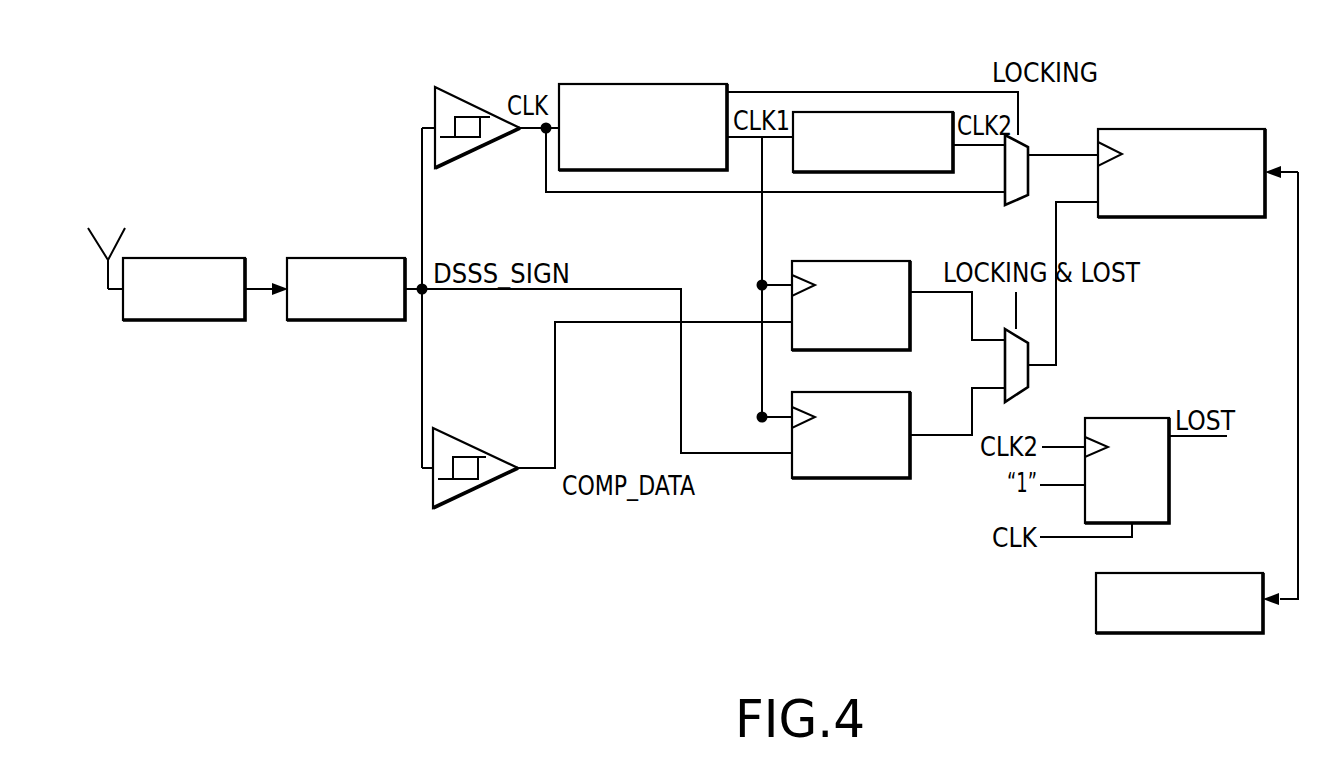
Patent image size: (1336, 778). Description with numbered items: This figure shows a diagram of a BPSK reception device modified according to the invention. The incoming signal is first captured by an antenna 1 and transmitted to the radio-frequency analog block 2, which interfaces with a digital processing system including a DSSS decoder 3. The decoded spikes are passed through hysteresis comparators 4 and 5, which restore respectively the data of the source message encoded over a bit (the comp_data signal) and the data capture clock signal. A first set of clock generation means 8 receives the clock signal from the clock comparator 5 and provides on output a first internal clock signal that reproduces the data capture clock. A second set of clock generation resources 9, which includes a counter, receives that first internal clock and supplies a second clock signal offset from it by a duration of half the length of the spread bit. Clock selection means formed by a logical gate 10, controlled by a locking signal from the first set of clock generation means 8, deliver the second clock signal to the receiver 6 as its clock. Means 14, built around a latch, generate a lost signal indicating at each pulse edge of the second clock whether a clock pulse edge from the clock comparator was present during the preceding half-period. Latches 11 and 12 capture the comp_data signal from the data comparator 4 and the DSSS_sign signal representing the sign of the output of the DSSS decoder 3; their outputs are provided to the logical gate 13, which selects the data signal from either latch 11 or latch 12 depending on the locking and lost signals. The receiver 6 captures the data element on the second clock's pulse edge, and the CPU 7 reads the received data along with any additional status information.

The antenna 1 is at (92, 222).
The radio-frequency analog block 2 is at (185, 258).
The DSSS decoder 3 is at (345, 258).
The hysteresis comparator 4 is at (435, 507).
The hysteresis comparator 5 is at (437, 88).
The receiver 6 is at (1182, 129).
The CPU 7 is at (1183, 633).
The first set of clock generation means 8 is at (651, 84).
The second set of clock generation resources 9 is at (878, 112).
The logical gate 10 is at (1030, 142).
The latch 11 is at (826, 262).
The latch 12 is at (850, 478).
The logical gate 13 is at (1028, 393).
The lost signal generation means 14 is at (1143, 418).